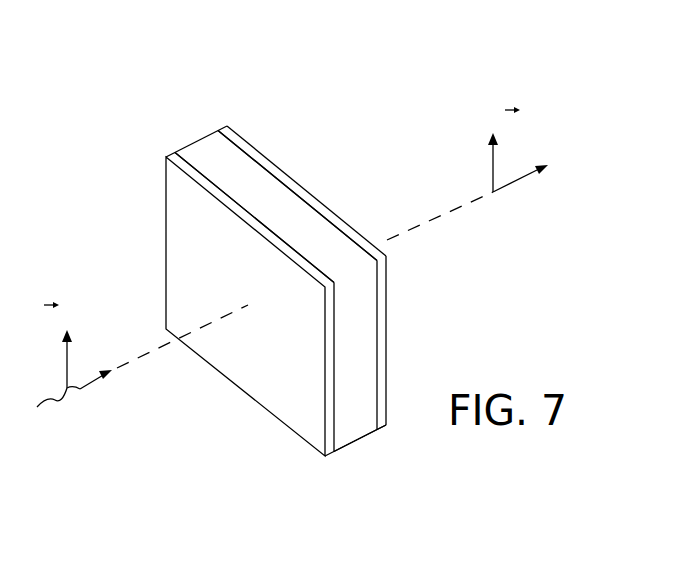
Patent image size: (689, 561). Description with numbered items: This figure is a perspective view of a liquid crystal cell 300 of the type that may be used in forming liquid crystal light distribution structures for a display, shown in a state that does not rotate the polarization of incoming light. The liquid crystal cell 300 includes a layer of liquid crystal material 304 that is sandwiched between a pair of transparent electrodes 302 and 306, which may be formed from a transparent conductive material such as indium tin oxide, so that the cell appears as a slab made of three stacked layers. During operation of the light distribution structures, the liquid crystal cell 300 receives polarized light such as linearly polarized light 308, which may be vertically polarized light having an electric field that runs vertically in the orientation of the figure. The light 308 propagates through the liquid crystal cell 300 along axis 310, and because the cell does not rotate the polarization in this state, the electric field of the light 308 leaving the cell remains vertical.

The liquid crystal cell 300 is at (175, 62).
The electrode 302 is at (186, 171).
The liquid crystal material 304 is at (212, 150).
The electrode 306 is at (268, 167).
The linearly polarized light 308 is at (512, 183).
The axis 310 is at (147, 351).